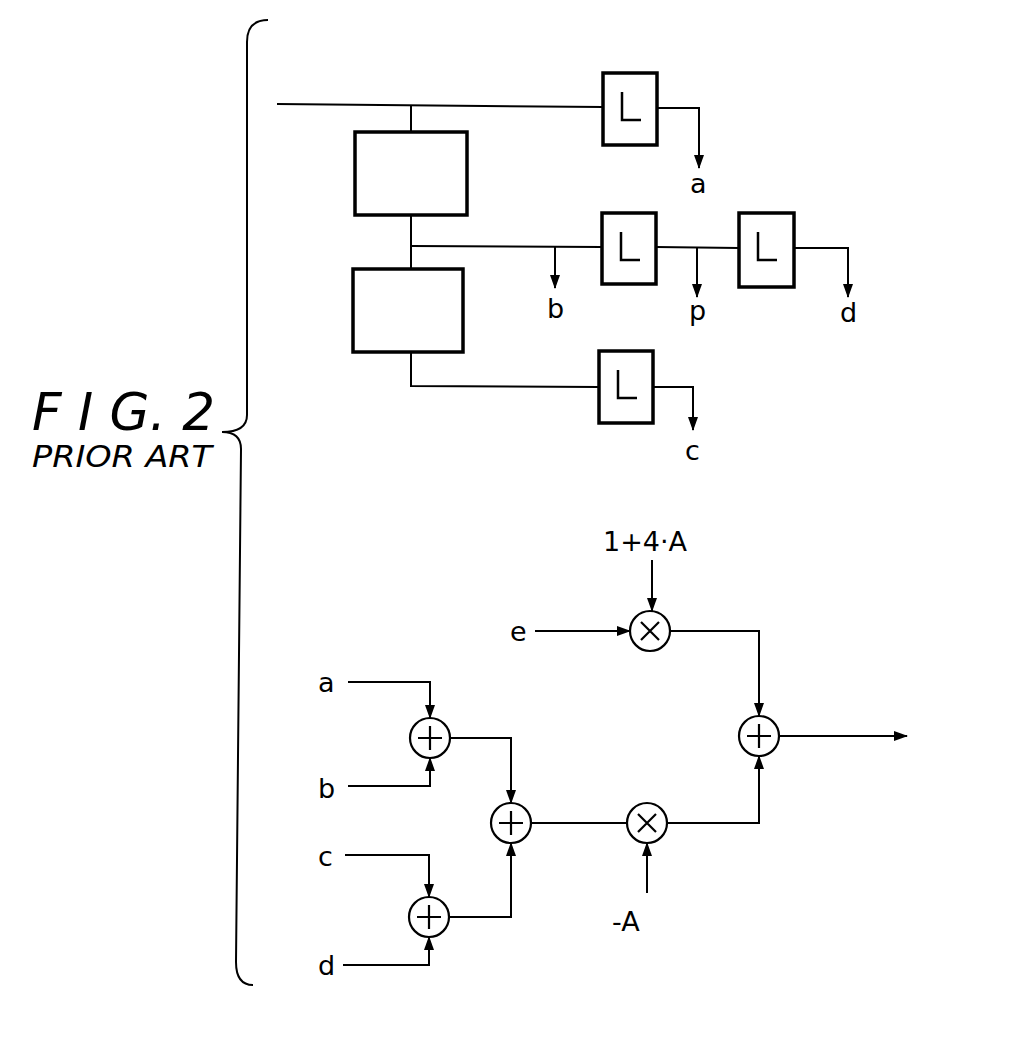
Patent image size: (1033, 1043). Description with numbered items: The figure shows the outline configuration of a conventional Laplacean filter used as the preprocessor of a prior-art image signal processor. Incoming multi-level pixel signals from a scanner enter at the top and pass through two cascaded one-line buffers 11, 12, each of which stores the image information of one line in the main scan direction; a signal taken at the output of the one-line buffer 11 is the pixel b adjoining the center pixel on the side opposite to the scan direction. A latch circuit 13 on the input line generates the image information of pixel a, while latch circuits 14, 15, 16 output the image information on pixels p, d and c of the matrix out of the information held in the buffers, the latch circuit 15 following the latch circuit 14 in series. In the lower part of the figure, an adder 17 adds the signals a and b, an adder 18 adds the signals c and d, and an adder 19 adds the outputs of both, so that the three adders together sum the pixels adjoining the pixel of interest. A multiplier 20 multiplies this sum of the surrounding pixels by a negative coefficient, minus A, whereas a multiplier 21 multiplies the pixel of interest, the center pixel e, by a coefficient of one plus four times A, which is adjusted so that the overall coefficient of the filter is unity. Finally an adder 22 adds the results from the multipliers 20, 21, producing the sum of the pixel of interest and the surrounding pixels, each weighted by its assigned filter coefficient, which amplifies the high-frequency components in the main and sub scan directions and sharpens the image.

The one-line buffer 11 is at (355, 168).
The one-line buffer 12 is at (353, 293).
The latch circuit 13 is at (603, 75).
The latch circuit 14 is at (602, 218).
The latch circuit 15 is at (800, 220).
The latch circuit 16 is at (599, 395).
The adder 17 is at (445, 725).
The adder 18 is at (445, 930).
The adder 19 is at (528, 838).
The multiplier 20 is at (653, 803).
The multiplier 21 is at (655, 652).
The adder 22 is at (775, 750).